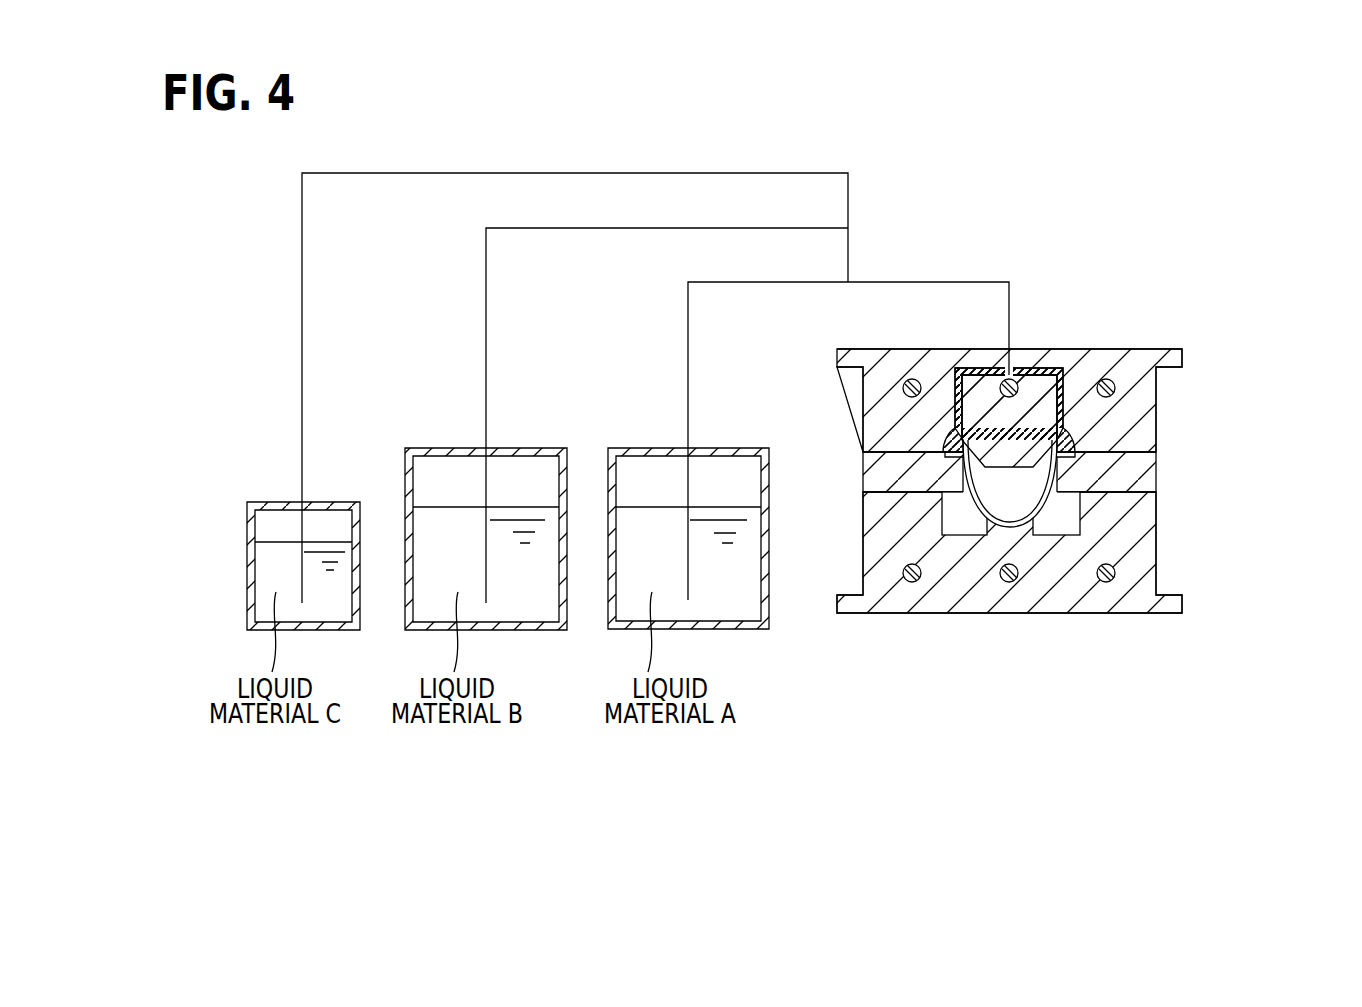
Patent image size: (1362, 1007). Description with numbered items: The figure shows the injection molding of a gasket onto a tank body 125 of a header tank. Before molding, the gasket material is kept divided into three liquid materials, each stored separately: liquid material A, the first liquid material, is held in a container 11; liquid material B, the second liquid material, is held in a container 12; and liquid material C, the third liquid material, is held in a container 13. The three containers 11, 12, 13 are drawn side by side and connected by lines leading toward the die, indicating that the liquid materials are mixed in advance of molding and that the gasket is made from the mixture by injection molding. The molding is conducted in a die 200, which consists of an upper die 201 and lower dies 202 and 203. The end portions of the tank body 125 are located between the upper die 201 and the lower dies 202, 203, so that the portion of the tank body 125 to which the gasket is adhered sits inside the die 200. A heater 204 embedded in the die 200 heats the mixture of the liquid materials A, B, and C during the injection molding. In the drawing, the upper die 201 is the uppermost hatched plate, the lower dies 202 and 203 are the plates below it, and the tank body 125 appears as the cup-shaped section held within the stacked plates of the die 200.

The container 11 is at (730, 448).
The container 12 is at (528, 448).
The container 13 is at (343, 502).
The tank body 125 is at (1050, 500).
The die 200 is at (1089, 515).
The upper die 201 is at (1009, 400).
The lower die 202 is at (1009, 472).
The lower die 203 is at (1009, 552).
The heater 204 is at (912, 581).